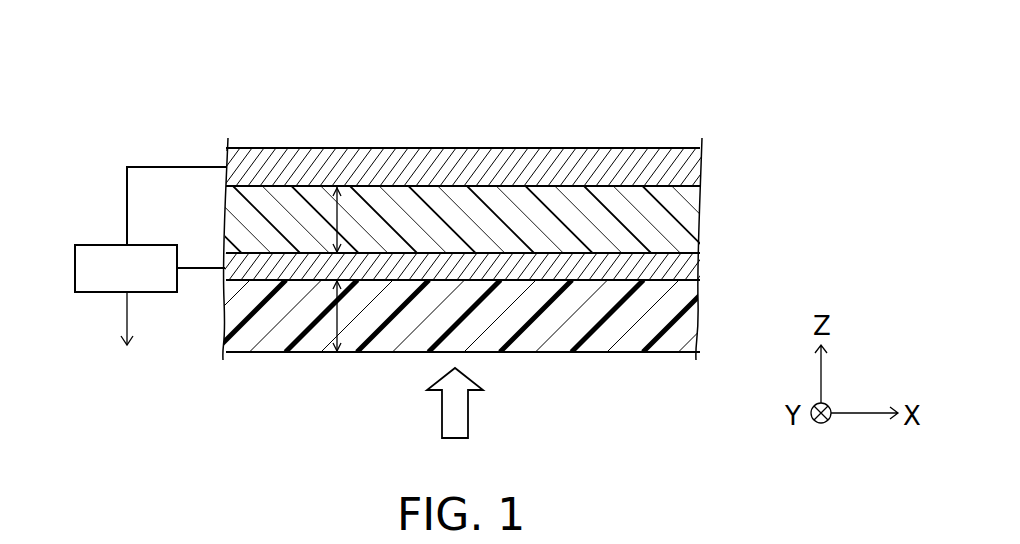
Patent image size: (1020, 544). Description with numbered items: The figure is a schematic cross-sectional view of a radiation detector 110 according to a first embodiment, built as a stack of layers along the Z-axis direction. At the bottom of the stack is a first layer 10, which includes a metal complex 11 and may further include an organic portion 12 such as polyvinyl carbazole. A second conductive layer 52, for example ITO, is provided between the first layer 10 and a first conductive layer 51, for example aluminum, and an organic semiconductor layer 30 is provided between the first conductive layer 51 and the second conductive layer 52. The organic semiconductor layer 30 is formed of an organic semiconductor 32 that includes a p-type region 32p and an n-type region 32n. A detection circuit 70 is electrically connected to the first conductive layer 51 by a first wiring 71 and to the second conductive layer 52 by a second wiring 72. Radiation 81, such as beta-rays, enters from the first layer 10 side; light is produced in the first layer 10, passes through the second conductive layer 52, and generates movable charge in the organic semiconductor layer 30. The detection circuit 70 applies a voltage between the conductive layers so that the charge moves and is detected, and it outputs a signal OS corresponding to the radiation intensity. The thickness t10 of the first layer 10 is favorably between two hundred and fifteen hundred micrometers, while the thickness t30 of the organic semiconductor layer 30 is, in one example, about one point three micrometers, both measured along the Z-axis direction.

The radiation detector 110 is at (838, 145).
The first layer 10 is at (472, 352).
The metal complex 11 is at (557, 299).
The organic portion 12 is at (617, 300).
The organic semiconductor layer 30 is at (690, 215).
The organic semiconductor 32 is at (660, 95).
The p-type region 32p is at (573, 212).
The n-type region 32n is at (637, 212).
The first conductive layer 51 is at (698, 165).
The second conductive layer 52 is at (693, 260).
The detection circuit 70 is at (103, 244).
The first wiring 71 is at (123, 188).
The second wiring 72 is at (200, 270).
The signal OS is at (123, 315).
The radiation 81 is at (440, 412).
The thickness of the organic semiconductor layer t30 is at (336, 197).
The thickness of the first layer t10 is at (335, 320).